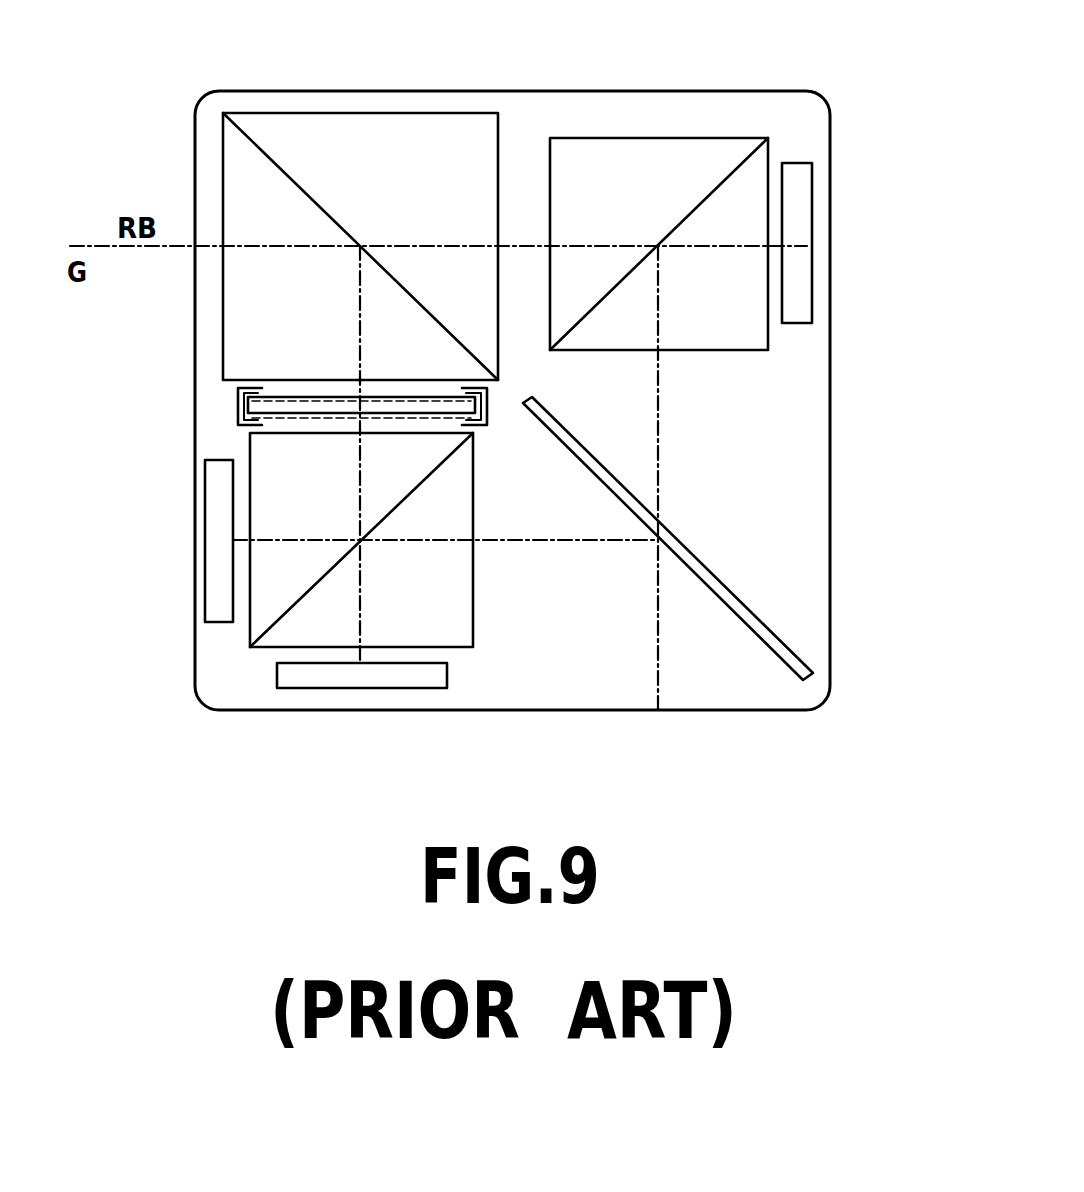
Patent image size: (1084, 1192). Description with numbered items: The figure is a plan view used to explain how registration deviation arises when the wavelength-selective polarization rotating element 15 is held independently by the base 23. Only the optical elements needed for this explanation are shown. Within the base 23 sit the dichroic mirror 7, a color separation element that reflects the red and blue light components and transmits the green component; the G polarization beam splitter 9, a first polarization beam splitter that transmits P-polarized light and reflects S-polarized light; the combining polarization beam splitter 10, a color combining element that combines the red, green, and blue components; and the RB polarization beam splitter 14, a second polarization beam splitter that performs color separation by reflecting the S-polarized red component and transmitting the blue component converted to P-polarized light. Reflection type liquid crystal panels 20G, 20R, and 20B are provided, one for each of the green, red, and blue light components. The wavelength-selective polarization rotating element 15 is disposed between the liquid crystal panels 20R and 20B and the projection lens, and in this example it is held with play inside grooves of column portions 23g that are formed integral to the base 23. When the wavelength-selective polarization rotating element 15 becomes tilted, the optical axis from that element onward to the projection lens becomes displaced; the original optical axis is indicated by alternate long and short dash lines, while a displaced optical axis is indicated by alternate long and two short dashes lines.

The dichroic mirror 7 is at (760, 633).
The G polarization beam splitter 9 is at (648, 145).
The combining polarization beam splitter 10 is at (373, 125).
The RB polarization beam splitter 14 is at (263, 500).
The wavelength-selective polarization rotating element 15 is at (290, 395).
The liquid crystal panel 20G is at (803, 208).
The liquid crystal panel 20B is at (213, 586).
The liquid crystal panel 20R is at (326, 678).
The base 23 is at (808, 538).
The column portions 23g is at (237, 405).